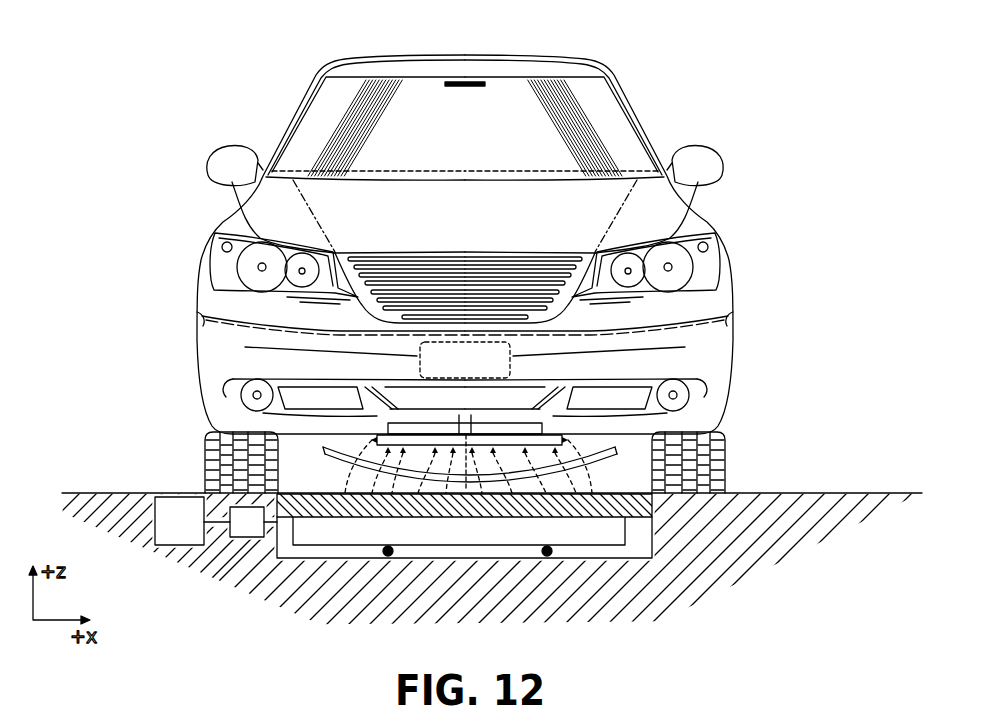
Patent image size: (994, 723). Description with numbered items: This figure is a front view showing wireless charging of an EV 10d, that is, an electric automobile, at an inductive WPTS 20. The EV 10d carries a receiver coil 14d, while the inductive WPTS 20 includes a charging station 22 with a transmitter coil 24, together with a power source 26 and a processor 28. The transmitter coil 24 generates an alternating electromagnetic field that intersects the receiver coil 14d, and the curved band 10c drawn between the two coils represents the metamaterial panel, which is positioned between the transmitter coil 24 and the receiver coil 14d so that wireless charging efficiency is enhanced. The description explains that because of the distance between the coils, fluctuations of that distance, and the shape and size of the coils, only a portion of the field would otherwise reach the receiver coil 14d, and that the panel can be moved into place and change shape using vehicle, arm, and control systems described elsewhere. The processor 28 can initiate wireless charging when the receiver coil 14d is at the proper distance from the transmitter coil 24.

The EV 10d is at (718, 43).
The receiver coil 14d is at (560, 434).
The magnetic field / wireless power transfer region 10c is at (331, 465).
The inductive WPTS 20 is at (803, 488).
The charging station 22 is at (832, 603).
The transmitter coil 24 is at (615, 553).
The power source 26 is at (180, 546).
The processor 28 is at (248, 538).